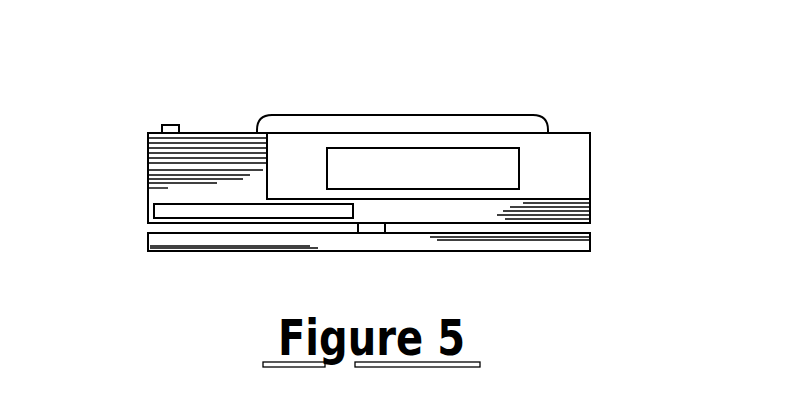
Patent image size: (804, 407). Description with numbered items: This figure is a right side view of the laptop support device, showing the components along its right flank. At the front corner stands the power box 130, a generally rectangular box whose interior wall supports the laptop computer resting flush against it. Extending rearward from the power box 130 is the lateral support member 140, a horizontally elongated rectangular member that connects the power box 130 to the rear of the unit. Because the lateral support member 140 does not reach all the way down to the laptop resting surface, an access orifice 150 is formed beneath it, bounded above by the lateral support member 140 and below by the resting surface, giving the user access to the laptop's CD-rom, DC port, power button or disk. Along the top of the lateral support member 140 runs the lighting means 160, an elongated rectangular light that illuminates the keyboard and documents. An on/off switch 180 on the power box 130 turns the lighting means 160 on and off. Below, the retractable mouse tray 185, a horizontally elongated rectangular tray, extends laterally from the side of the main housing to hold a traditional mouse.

The power box 130 is at (208, 133).
The lateral support member 140 is at (337, 142).
The access orifice 150 is at (504, 168).
The lighting means 160 is at (443, 123).
The on/off switch 180 is at (172, 127).
The retractable mouse tray 185 is at (188, 212).